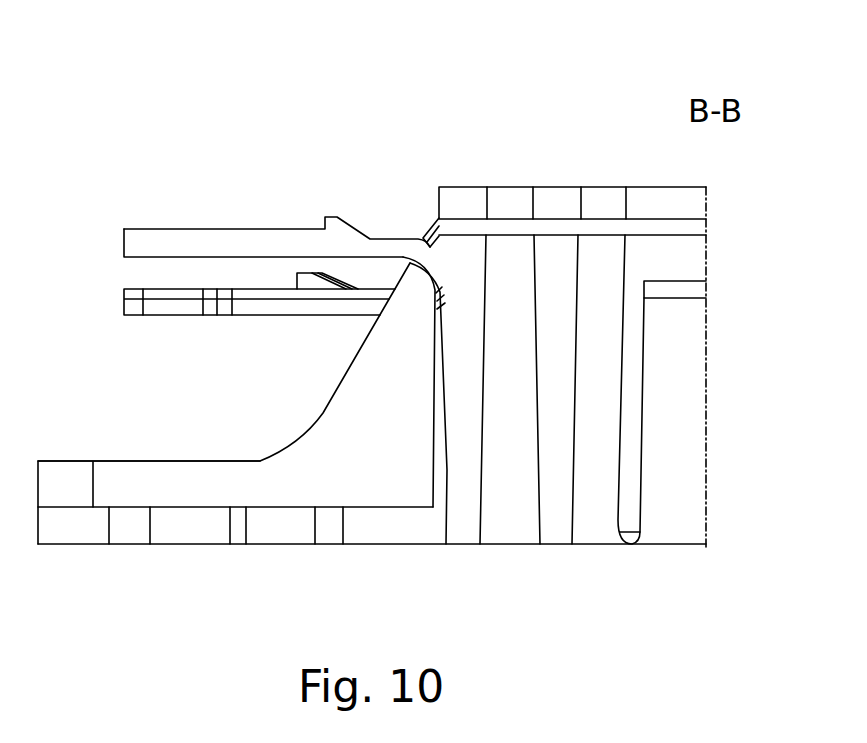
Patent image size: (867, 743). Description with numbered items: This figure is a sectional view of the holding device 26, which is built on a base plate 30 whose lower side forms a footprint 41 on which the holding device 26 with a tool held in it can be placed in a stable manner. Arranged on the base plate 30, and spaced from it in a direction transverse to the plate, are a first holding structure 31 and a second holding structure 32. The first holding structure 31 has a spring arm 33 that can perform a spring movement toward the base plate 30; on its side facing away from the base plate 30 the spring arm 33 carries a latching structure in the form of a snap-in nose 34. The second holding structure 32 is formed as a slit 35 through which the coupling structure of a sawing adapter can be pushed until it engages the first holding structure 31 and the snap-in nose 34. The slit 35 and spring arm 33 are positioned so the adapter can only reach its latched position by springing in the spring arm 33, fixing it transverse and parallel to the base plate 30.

The holding device 26 is at (515, 562).
The base plate 30 is at (272, 531).
The first holding structure 31 is at (293, 140).
The second holding structure 32 is at (557, 166).
The spring arm 33 is at (158, 229).
The snap-in nose 34 is at (323, 273).
The slit 35 is at (608, 230).
The footprint 41 is at (187, 545).